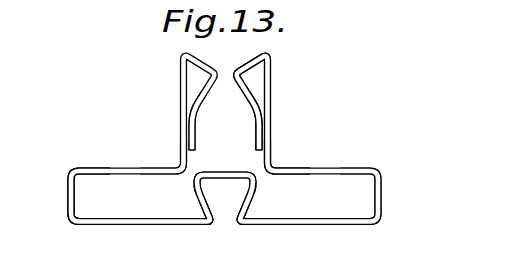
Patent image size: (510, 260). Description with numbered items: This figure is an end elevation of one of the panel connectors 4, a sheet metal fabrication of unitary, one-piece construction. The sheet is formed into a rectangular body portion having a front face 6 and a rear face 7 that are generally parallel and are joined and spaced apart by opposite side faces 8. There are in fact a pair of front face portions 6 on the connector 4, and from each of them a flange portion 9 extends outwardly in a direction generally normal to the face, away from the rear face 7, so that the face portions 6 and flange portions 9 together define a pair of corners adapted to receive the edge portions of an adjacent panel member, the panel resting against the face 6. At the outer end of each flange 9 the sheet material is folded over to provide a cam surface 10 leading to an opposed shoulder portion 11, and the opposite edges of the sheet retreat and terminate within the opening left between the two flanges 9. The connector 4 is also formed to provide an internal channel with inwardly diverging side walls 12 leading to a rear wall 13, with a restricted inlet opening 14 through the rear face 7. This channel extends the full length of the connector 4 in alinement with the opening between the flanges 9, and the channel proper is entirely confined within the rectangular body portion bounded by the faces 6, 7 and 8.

The panel connector 4 is at (122, 225).
The front face 6 is at (117, 168).
The rear face 7 is at (169, 225).
The side face 8 is at (67, 193).
The flange portion 9 is at (181, 80).
The cam surface 10 is at (248, 57).
The shoulder portion 11 is at (197, 103).
The side wall 12 is at (259, 201).
The rear wall 13 is at (219, 171).
The inlet opening 14 is at (223, 221).